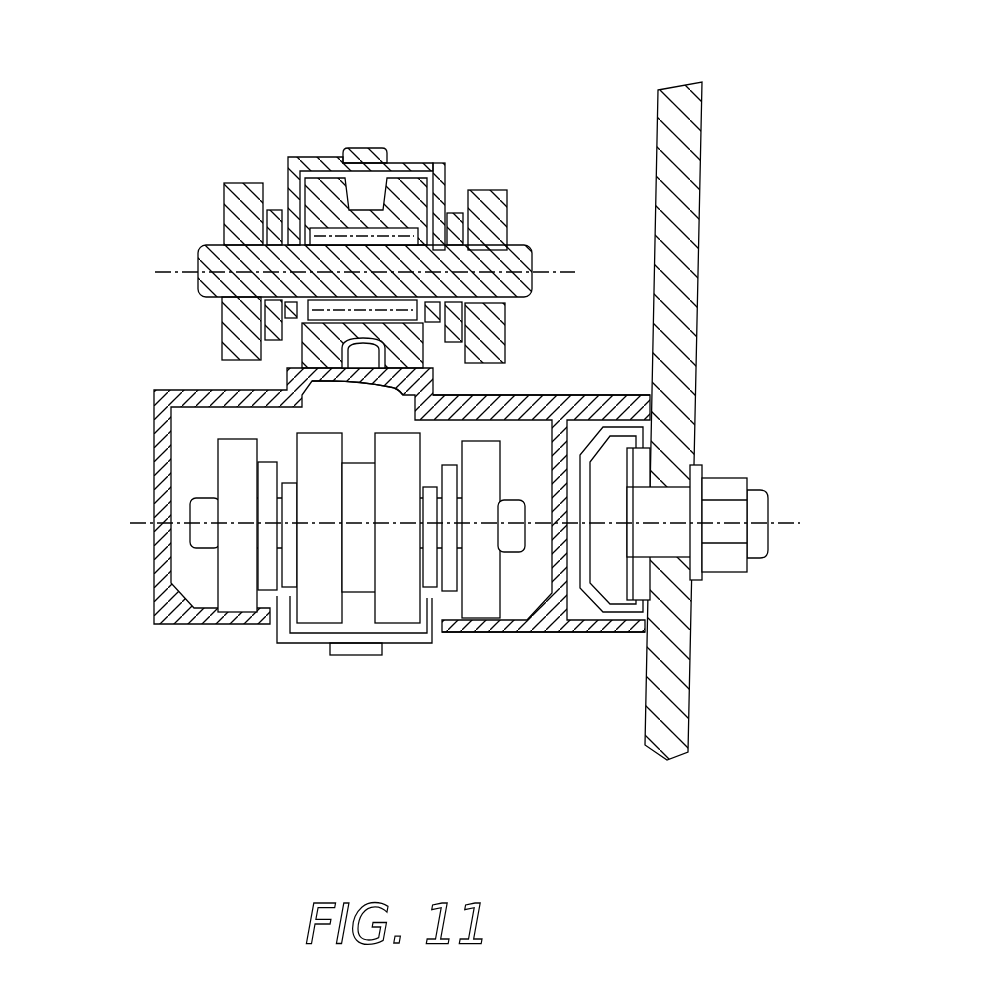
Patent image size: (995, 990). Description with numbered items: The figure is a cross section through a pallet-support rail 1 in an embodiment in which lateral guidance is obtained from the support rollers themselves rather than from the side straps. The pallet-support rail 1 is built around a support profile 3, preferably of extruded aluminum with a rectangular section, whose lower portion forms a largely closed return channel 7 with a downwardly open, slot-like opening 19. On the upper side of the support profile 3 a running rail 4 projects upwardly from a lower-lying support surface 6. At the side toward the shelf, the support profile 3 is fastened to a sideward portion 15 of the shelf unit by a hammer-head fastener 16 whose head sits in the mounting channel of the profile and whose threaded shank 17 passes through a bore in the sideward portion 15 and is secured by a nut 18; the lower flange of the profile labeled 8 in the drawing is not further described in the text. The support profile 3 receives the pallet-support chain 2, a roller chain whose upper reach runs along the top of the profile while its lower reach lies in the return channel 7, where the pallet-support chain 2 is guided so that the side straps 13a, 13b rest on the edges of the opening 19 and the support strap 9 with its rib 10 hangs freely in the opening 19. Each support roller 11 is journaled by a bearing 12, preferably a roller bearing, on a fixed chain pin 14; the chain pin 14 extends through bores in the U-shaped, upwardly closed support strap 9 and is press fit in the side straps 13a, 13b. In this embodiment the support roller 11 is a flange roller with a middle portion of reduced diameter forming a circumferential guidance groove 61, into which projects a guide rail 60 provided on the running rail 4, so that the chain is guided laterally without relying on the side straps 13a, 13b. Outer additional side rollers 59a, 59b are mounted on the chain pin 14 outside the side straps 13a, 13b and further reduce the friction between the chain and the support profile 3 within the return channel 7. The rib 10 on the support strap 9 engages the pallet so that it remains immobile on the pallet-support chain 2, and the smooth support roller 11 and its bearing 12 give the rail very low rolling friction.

The pallet-support rail 1 is at (115, 527).
The pallet-support chain 2 is at (190, 188).
The support profile 3 is at (161, 410).
The running rail 4 is at (210, 427).
The support surface 6 is at (603, 393).
The return channel 7 is at (189, 583).
The bottom flange 8 is at (645, 633).
The support strap 9 is at (307, 163).
The rib 10 is at (347, 148).
The support roller 11 is at (440, 173).
The bearing 12 is at (390, 235).
The side strap 13a is at (270, 325).
The side strap 13b is at (502, 193).
The chain pin 14 is at (216, 260).
The sideward portion 15 is at (682, 135).
The hammer-head fastener 16 is at (603, 480).
The threaded shank 17 is at (757, 507).
The nut 18 is at (722, 560).
The slot-like opening 19 is at (275, 625).
The side roller 59a is at (240, 187).
The side roller 59b is at (492, 238).
The guide rail 60 is at (544, 280).
The circumferential guidance groove 61 is at (355, 607).